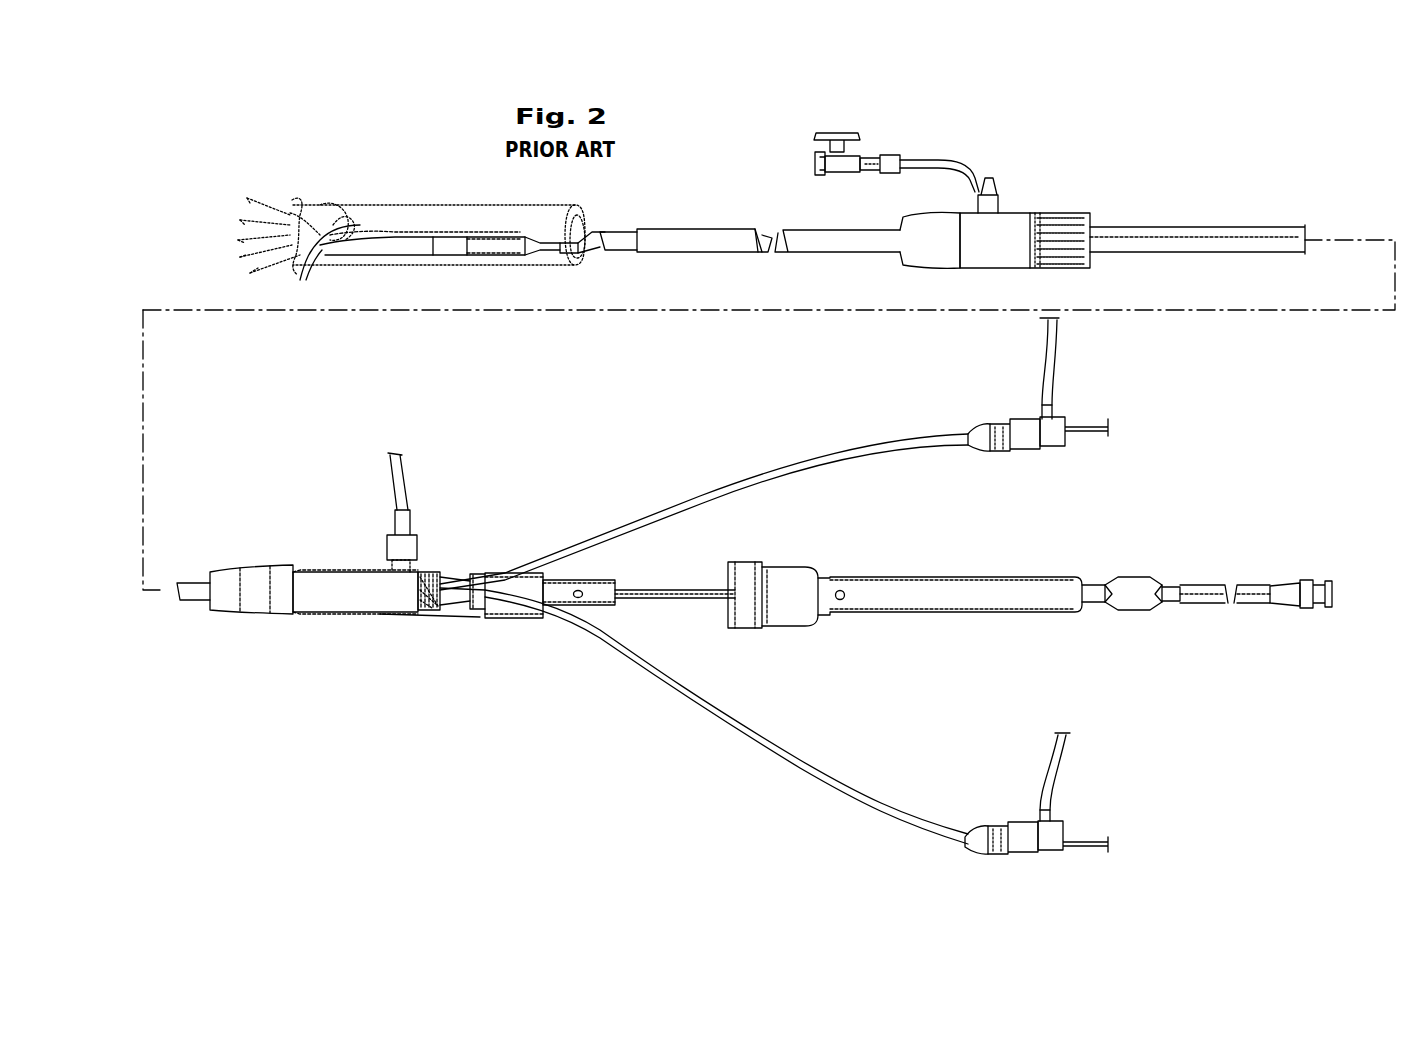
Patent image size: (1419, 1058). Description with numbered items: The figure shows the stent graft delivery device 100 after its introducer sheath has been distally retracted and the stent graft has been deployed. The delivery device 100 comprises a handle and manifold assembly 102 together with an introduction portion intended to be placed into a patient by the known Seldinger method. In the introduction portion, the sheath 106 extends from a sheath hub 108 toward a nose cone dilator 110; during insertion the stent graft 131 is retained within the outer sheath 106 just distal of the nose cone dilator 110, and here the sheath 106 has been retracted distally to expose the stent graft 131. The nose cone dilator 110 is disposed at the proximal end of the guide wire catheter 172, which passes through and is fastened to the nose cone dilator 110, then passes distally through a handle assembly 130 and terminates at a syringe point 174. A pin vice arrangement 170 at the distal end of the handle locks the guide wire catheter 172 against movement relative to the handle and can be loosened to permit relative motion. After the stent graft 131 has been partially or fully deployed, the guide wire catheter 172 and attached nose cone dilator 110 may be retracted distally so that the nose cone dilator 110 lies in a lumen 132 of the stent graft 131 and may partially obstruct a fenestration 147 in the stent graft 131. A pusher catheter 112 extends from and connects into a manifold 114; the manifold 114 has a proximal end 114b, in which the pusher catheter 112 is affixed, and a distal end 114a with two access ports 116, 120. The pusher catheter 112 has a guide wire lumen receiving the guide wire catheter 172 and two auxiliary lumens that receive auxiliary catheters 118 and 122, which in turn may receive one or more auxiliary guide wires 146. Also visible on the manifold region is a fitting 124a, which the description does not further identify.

The delivery device 100 is at (240, 200).
The handle and manifold assembly 102 is at (305, 700).
The sheath 106 is at (693, 237).
The sheath hub 108 is at (1020, 228).
The nose cone dilator 110 is at (408, 247).
The pusher catheter 112 is at (622, 247).
The manifold 114 is at (370, 583).
The distal end of the manifold 114a is at (430, 630).
The proximal end of the manifold 114b is at (235, 630).
The access port 116 is at (443, 578).
The auxiliary catheter 118 is at (630, 660).
The access port 120 is at (430, 603).
The auxiliary catheter 122 is at (752, 470).
The strain relief block 124a is at (592, 600).
The handle assembly 130 is at (1000, 548).
The stent graft 131 is at (462, 203).
The lumen 132 is at (590, 225).
The auxiliary guide wire 146 is at (1085, 440).
The fenestration 147 is at (345, 218).
The pin vice arrangement 170 is at (1137, 592).
The guide wire catheter 172 is at (545, 247).
The syringe point 174 is at (1303, 590).